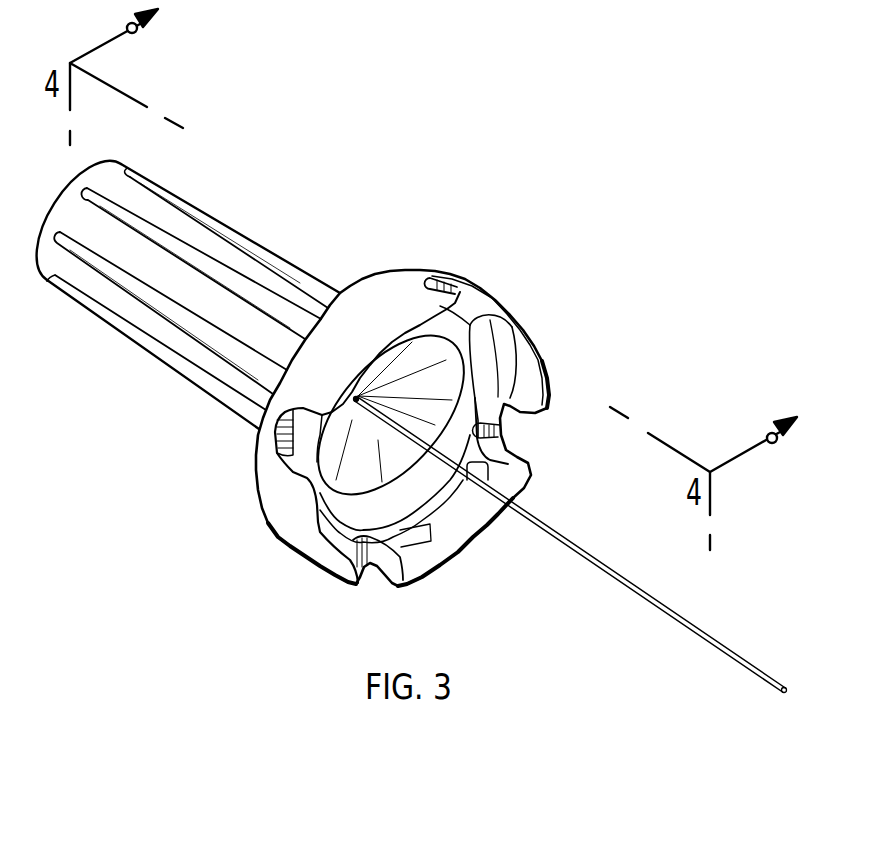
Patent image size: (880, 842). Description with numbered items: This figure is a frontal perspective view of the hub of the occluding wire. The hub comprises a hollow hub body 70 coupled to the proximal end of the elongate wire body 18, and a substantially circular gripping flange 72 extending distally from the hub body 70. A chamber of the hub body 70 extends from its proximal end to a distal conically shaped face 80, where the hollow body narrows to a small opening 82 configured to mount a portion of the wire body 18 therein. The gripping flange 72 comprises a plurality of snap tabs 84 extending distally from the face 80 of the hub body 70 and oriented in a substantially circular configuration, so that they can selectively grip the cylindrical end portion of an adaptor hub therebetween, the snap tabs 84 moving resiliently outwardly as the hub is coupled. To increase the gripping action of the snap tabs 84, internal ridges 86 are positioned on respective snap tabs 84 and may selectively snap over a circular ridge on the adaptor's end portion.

The elongate wire body 18 is at (658, 605).
The hub body 70 is at (225, 248).
The gripping flange 72 is at (395, 307).
The distal conically shaped face 80 is at (333, 448).
The small opening 82 is at (440, 401).
The snap tabs 84 is at (530, 368).
The internal ridges 86 is at (452, 513).